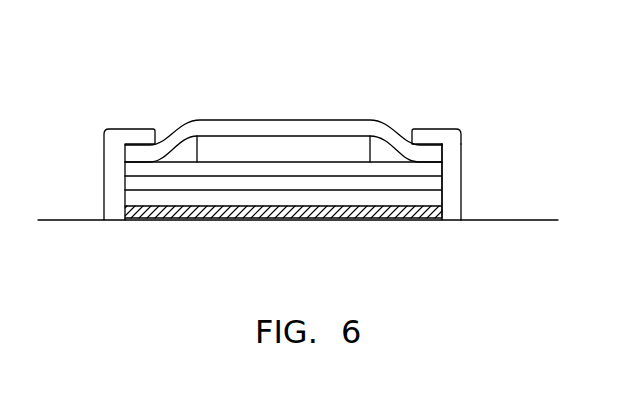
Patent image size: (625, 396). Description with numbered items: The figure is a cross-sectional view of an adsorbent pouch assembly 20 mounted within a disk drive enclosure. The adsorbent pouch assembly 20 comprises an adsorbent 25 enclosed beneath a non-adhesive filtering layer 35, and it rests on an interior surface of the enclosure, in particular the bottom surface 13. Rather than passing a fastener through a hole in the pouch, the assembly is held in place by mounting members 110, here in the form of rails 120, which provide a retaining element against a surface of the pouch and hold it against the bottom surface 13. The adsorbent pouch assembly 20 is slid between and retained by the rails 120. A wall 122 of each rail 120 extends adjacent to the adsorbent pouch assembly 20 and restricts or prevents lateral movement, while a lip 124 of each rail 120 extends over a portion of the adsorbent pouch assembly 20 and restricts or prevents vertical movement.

The bottom surface 13 is at (515, 220).
The adsorbent pouch assembly 20 is at (328, 80).
The adsorbent 25 is at (212, 136).
The filtering layer 35 is at (172, 132).
The mounting member 110 is at (104, 185).
The rail 120 is at (491, 142).
The wall 122 is at (462, 198).
The lip 124 is at (423, 129).